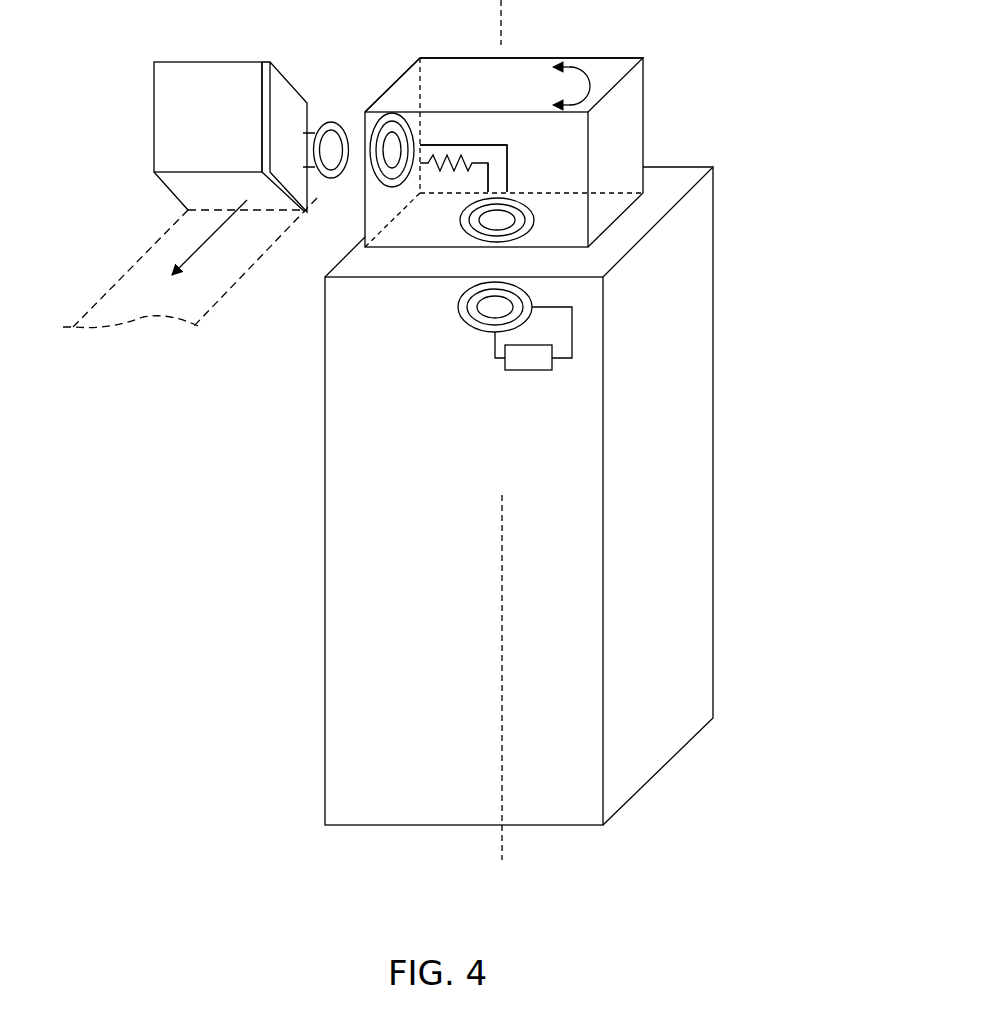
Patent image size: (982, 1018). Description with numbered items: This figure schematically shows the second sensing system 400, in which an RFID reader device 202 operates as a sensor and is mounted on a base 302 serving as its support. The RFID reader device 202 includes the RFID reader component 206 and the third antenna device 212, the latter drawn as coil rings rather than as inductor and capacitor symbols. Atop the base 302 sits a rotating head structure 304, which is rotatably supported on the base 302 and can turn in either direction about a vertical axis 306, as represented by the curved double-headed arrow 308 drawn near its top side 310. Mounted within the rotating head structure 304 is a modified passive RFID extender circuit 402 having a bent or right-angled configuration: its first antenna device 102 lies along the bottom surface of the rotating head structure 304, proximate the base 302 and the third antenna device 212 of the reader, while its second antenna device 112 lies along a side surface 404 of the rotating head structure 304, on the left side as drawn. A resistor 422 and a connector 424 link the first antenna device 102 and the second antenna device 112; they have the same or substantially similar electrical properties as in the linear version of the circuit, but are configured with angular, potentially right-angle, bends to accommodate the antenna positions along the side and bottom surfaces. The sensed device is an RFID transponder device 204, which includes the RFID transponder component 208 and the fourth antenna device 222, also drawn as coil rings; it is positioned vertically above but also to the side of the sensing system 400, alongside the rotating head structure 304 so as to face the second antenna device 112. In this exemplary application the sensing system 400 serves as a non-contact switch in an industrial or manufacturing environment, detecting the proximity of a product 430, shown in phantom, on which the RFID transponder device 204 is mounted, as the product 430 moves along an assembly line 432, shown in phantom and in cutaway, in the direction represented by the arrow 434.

The first antenna device 102 is at (462, 224).
The second antenna device 112 is at (373, 177).
The RFID reader device 202 is at (455, 336).
The RFID transponder device 204 is at (257, 120).
The RFID reader component 206 is at (492, 380).
The RFID transponder component 208 is at (268, 62).
The third antenna device 212 is at (446, 307).
The fourth antenna device 222 is at (327, 112).
The base 302 is at (440, 718).
The rotating head structure 304 is at (641, 144).
The vertical axis 306 is at (502, 20).
The curved double-headed arrow 308 is at (590, 70).
The top side 310 is at (438, 58).
The second sensing system 400 is at (744, 437).
The passive RFID extender circuit 402 is at (512, 177).
The side surface 404 is at (408, 72).
The resistor 422 is at (483, 175).
The connector 424 is at (512, 150).
The product 430 is at (154, 120).
The assembly line 432 is at (172, 228).
The arrow 434 is at (246, 200).